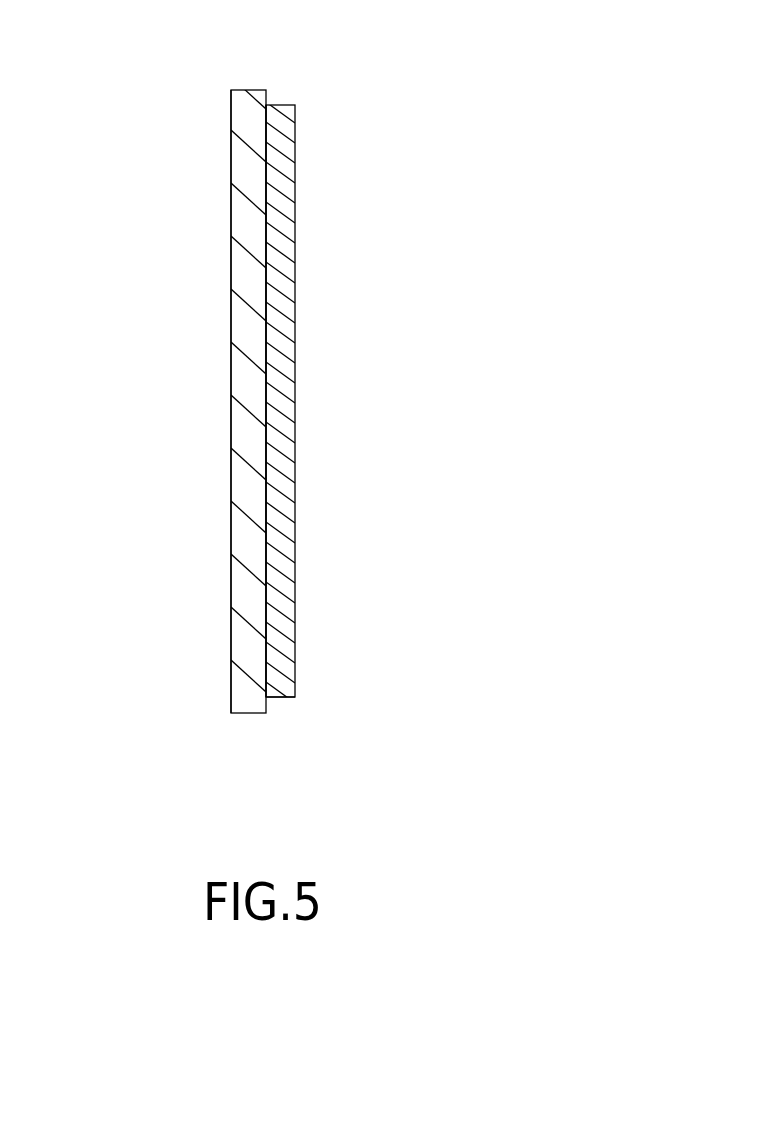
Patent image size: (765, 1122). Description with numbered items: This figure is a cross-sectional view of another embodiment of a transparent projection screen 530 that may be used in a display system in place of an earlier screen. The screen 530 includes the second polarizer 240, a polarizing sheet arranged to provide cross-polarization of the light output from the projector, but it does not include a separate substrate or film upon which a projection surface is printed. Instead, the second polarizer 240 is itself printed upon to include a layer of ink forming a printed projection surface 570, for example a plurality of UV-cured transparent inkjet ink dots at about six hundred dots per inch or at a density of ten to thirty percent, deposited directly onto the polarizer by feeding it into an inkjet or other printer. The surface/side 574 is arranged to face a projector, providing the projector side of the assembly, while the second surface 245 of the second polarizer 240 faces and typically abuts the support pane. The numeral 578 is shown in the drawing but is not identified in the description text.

The transparent projection screen 530 is at (118, 125).
The interface between substrate and coating layer 578 is at (266, 122).
The surface/side 574 is at (332, 333).
The printed projection surface 570 is at (304, 733).
The second polarizer 240 is at (244, 740).
The second surface 245 is at (231, 706).